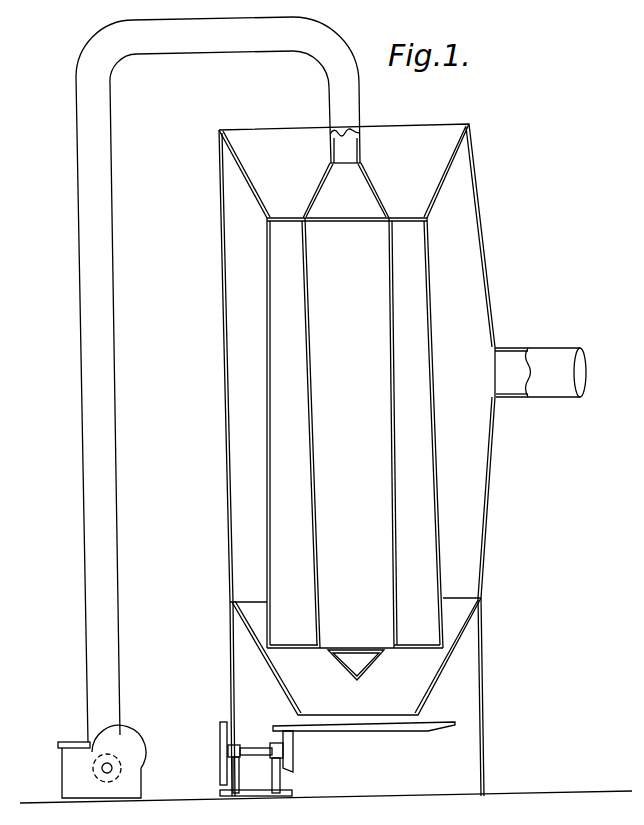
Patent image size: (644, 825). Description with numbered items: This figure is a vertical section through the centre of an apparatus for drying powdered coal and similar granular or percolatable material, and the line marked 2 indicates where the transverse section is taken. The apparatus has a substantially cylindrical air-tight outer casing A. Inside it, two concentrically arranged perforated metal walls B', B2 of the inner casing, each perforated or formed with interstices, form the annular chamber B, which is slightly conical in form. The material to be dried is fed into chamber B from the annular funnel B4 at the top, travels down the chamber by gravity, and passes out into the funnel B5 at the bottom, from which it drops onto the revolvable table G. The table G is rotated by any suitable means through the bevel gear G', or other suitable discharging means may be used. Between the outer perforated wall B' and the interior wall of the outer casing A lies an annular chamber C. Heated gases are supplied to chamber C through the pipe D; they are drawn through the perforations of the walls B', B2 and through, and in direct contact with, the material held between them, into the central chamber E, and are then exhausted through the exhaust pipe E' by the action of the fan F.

The outer casing A is at (485, 235).
The annular chamber B is at (312, 433).
The perforated metal wall of the inner casing B' is at (359, 433).
The perforated metal wall of the inner casing B2 is at (349, 433).
The annular funnel B4 is at (344, 171).
The funnel B5 is at (347, 676).
The annular chamber C is at (238, 470).
The pipe D is at (550, 352).
The chamber E is at (354, 341).
The exhaust pipe E' is at (195, 379).
The fan F is at (101, 764).
The revolvable table G is at (398, 702).
The bevel gear G' is at (346, 759).
The section line 2- 2 is at (273, 380).